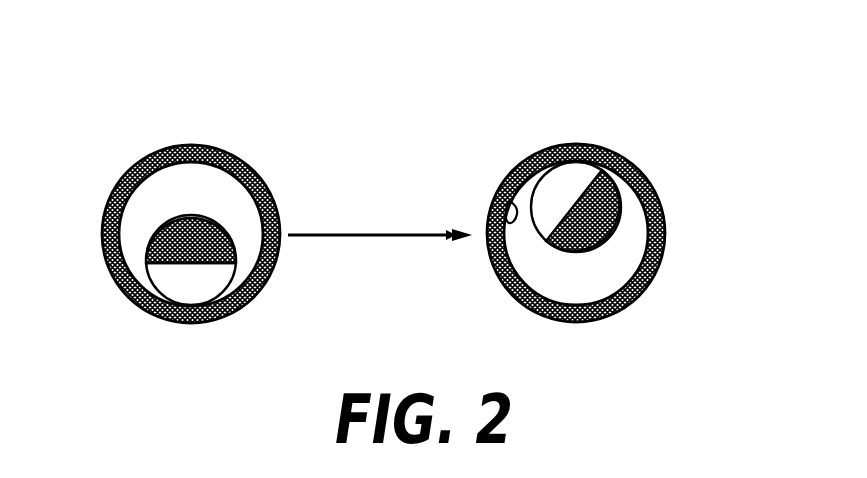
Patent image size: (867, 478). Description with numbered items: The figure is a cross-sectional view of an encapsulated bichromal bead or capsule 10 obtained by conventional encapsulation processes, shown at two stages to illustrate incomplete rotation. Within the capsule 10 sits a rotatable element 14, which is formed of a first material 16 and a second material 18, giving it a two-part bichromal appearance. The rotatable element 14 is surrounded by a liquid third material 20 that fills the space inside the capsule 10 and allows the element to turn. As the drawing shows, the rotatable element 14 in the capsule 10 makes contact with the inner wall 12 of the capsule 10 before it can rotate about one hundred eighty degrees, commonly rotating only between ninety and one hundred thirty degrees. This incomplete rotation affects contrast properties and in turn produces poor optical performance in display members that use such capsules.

The capsule 10 is at (394, 192).
The inner wall 12 is at (507, 198).
The rotatable element 14 is at (145, 272).
The first material 16 is at (223, 245).
The second material 18 is at (220, 280).
The liquid third material 20 is at (142, 206).